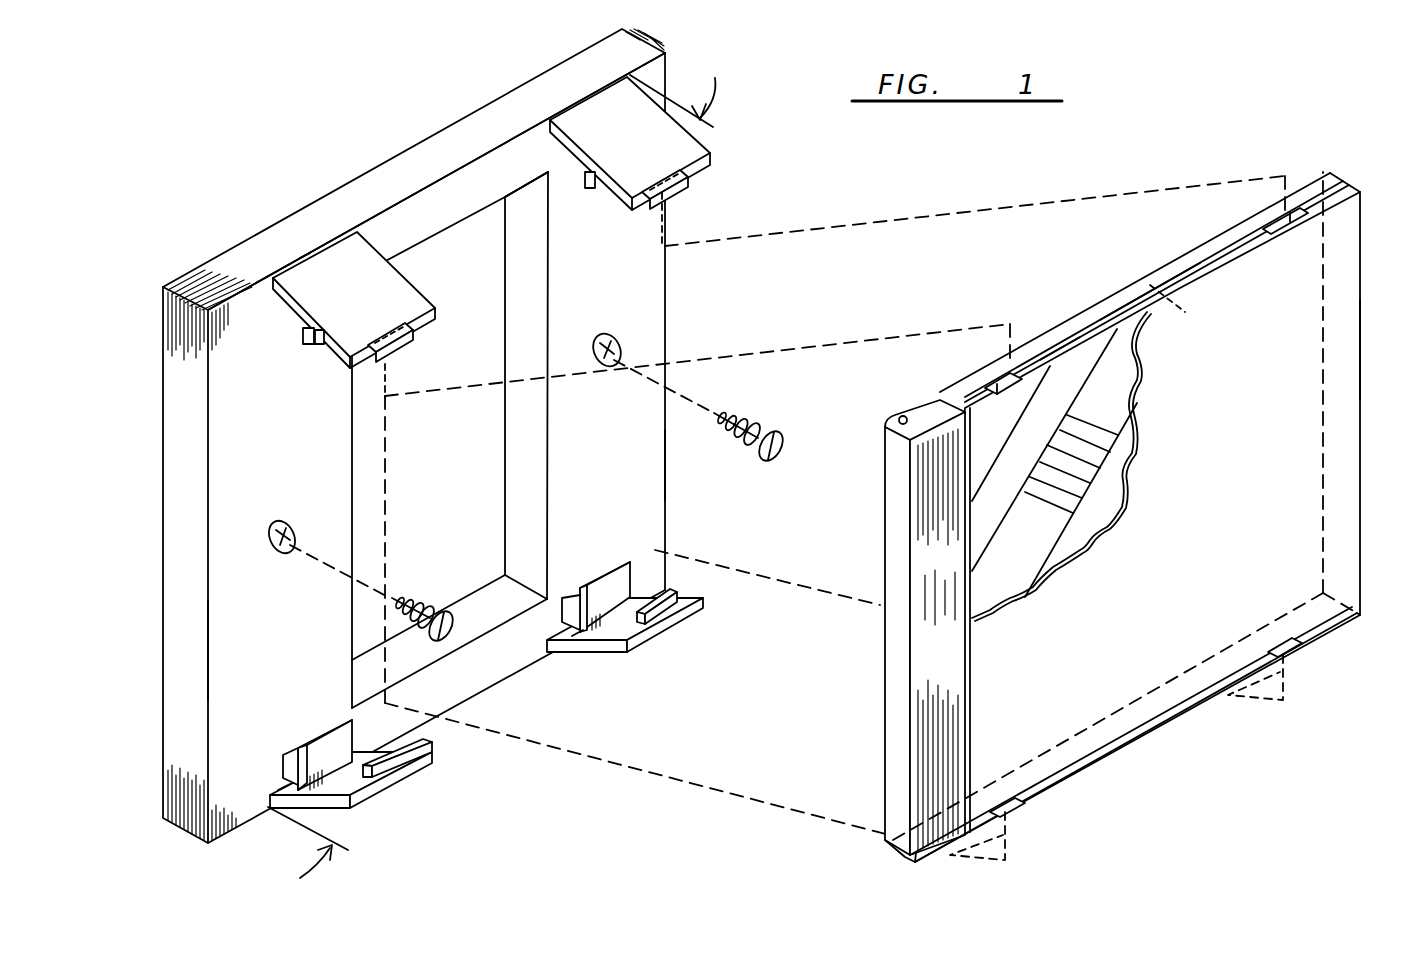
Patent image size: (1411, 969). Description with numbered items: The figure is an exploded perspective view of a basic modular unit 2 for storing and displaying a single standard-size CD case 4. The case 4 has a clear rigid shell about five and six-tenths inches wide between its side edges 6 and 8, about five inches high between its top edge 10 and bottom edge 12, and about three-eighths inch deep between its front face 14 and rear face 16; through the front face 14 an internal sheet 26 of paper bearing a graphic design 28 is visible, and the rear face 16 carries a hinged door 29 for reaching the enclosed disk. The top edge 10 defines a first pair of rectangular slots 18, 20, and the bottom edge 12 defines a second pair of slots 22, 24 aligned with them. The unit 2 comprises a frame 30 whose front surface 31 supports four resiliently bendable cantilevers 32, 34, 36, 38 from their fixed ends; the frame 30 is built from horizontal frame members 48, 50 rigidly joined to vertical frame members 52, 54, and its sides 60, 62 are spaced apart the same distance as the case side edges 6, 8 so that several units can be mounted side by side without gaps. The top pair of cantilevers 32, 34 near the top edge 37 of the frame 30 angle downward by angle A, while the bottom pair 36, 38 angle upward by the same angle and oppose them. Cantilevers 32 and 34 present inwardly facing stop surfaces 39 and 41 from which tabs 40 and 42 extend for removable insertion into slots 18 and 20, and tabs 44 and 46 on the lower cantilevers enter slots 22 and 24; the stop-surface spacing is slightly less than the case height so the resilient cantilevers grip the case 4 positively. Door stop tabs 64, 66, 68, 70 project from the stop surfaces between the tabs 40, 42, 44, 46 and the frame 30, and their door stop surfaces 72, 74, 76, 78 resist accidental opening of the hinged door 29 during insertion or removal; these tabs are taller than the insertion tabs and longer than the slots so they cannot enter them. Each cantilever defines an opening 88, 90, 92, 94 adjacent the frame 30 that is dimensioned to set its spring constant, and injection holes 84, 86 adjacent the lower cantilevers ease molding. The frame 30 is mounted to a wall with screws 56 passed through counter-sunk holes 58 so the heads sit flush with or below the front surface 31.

The basic modular unit 2 is at (197, 258).
The CD case 4 is at (1362, 438).
The side edge 6 is at (887, 722).
The side edge 8 is at (1345, 330).
The top edge 10 is at (1120, 305).
The bottom edge 12 is at (1170, 690).
The front face 14 is at (1310, 268).
The rear face 16 is at (1165, 292).
The slot 18 is at (1000, 380).
The slot 20 is at (1290, 212).
The slot 22 is at (1010, 810).
The slot 24 is at (1290, 655).
The internal sheet 26 is at (1060, 575).
The graphic design 28 is at (1100, 440).
The hinged door 29 is at (1055, 330).
The frame 30 is at (450, 118).
The front surface 31 is at (210, 388).
The cantilever 32 is at (290, 302).
The cantilever 34 is at (700, 165).
The cantilever 36 is at (380, 800).
The top edge 37 is at (415, 165).
The cantilever 38 is at (600, 652).
The stop surface 39 is at (430, 312).
The tab 40 is at (385, 395).
The stop surface 41 is at (640, 202).
The tab 42 is at (678, 200).
The tab 44 is at (425, 760).
The tab 46 is at (675, 592).
The horizontal frame member 48 is at (514, 170).
The horizontal frame member 50 is at (478, 680).
The vertical frame member 52 is at (215, 655).
The vertical frame member 54 is at (652, 293).
The screw 56 is at (438, 612).
The hole 58 is at (275, 546).
The side 60 is at (183, 775).
The side 62 is at (666, 465).
The door stop tab 64 is at (310, 338).
The door stop tab 66 is at (500, 296).
The door stop tab 68 is at (310, 745).
The door stop tab 70 is at (600, 565).
The door stop surface 72 is at (320, 340).
The door stop surface 74 is at (592, 190).
The door stop surface 76 is at (340, 740).
The door stop surface 78 is at (640, 560).
The injection hole 84 is at (292, 765).
The injection hole 86 is at (568, 598).
The opening 88 is at (320, 262).
The opening 90 is at (590, 108).
The opening 92 is at (282, 808).
The opening 94 is at (575, 648).